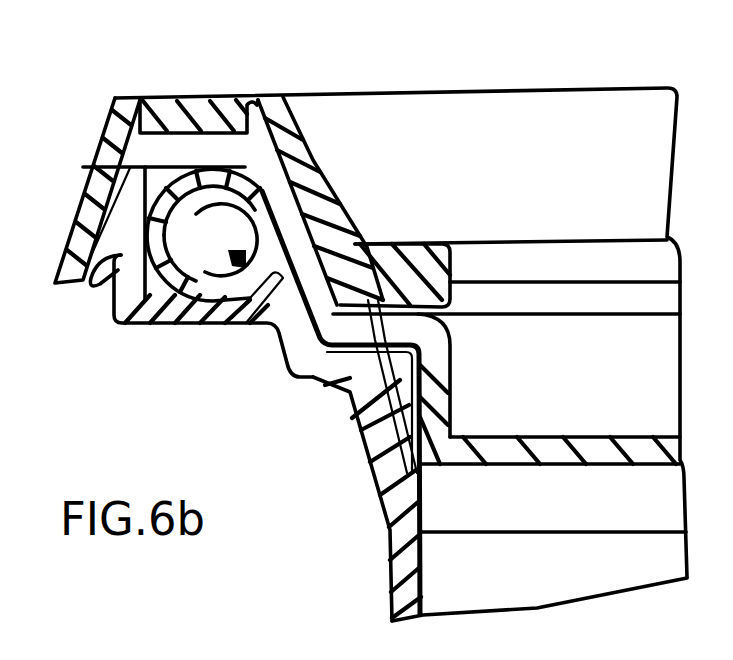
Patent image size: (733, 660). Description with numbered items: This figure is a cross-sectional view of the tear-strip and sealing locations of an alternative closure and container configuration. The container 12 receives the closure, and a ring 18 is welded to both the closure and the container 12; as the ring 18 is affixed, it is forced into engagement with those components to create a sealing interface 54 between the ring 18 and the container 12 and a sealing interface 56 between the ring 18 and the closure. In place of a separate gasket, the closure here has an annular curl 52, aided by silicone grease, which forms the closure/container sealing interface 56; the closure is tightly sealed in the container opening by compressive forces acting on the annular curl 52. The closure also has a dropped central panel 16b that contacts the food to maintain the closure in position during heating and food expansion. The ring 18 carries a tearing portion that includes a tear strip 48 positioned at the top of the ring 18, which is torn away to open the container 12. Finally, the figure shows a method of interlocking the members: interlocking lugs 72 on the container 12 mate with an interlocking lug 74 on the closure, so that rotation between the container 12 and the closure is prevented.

The container 12 is at (362, 400).
The dropped central panel 16b is at (488, 432).
The ring 18 is at (107, 137).
The tear strip 48 is at (197, 113).
The annular curl 52 is at (115, 310).
The sealing interface between ring and container 54 is at (305, 223).
The sealing interface between ring and closure 56 is at (108, 282).
The interlocking lugs 72 is at (315, 384).
The interlocking lug 74 is at (408, 400).